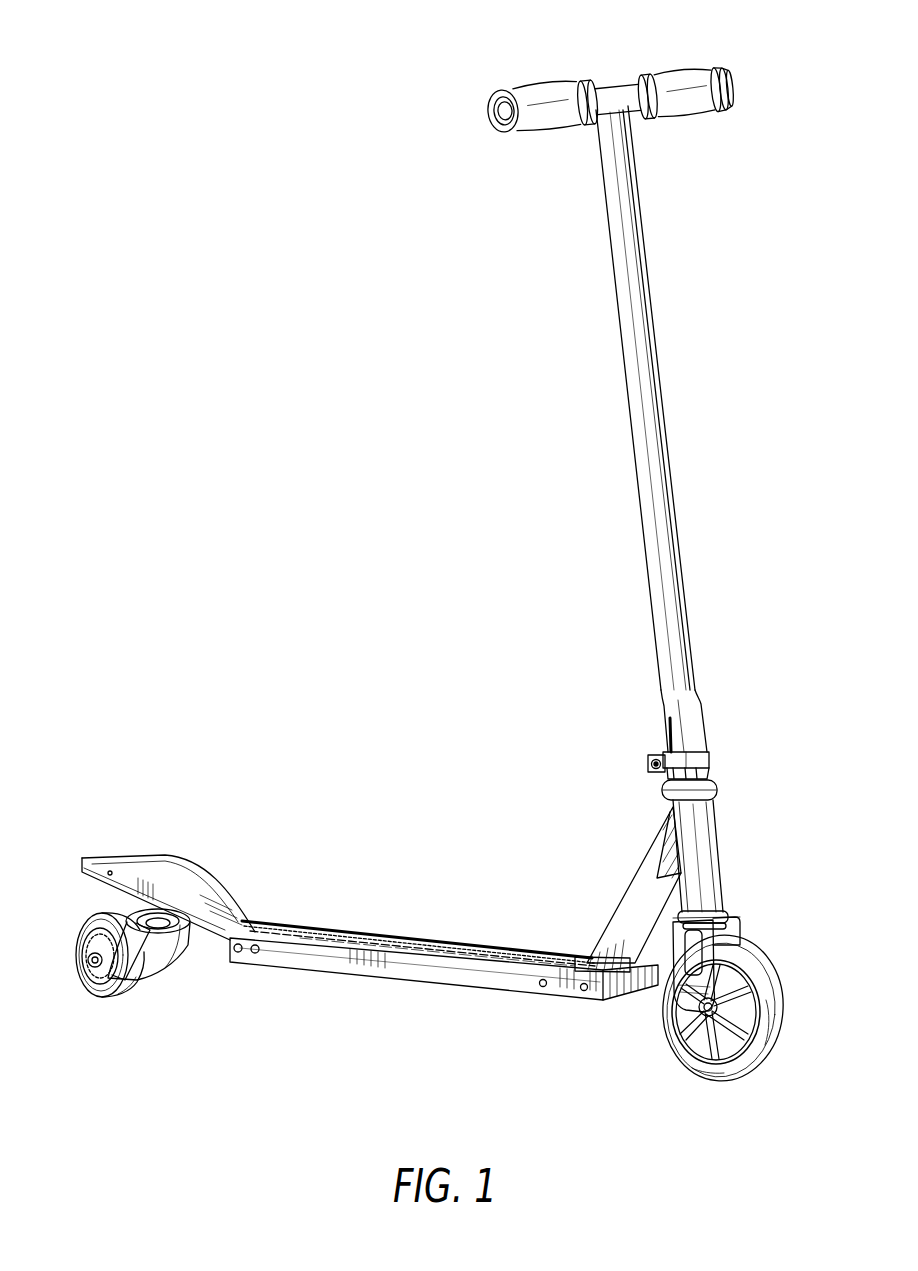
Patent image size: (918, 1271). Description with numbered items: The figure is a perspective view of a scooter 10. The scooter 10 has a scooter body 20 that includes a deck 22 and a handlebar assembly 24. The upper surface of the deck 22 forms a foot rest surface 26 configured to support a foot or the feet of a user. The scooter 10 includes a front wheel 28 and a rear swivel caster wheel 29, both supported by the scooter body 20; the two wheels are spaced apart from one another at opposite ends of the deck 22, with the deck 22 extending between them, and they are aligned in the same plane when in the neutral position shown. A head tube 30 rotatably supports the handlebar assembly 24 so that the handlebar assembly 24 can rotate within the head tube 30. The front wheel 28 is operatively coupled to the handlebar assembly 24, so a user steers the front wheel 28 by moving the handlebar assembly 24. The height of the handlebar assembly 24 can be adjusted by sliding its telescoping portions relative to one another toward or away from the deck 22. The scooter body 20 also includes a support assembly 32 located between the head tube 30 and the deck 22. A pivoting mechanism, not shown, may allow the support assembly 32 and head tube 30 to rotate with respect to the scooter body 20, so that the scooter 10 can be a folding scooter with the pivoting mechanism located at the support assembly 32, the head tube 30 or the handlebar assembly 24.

The scooter 10 is at (470, 490).
The scooter body 20 is at (342, 960).
The deck 22 is at (380, 930).
The handlebar assembly 24 is at (616, 92).
The foot rest surface 26 is at (426, 946).
The front wheel 28 is at (772, 968).
The rear swivel caster wheel 29 is at (113, 998).
The head tube 30 is at (712, 848).
The support assembly 32 is at (650, 880).